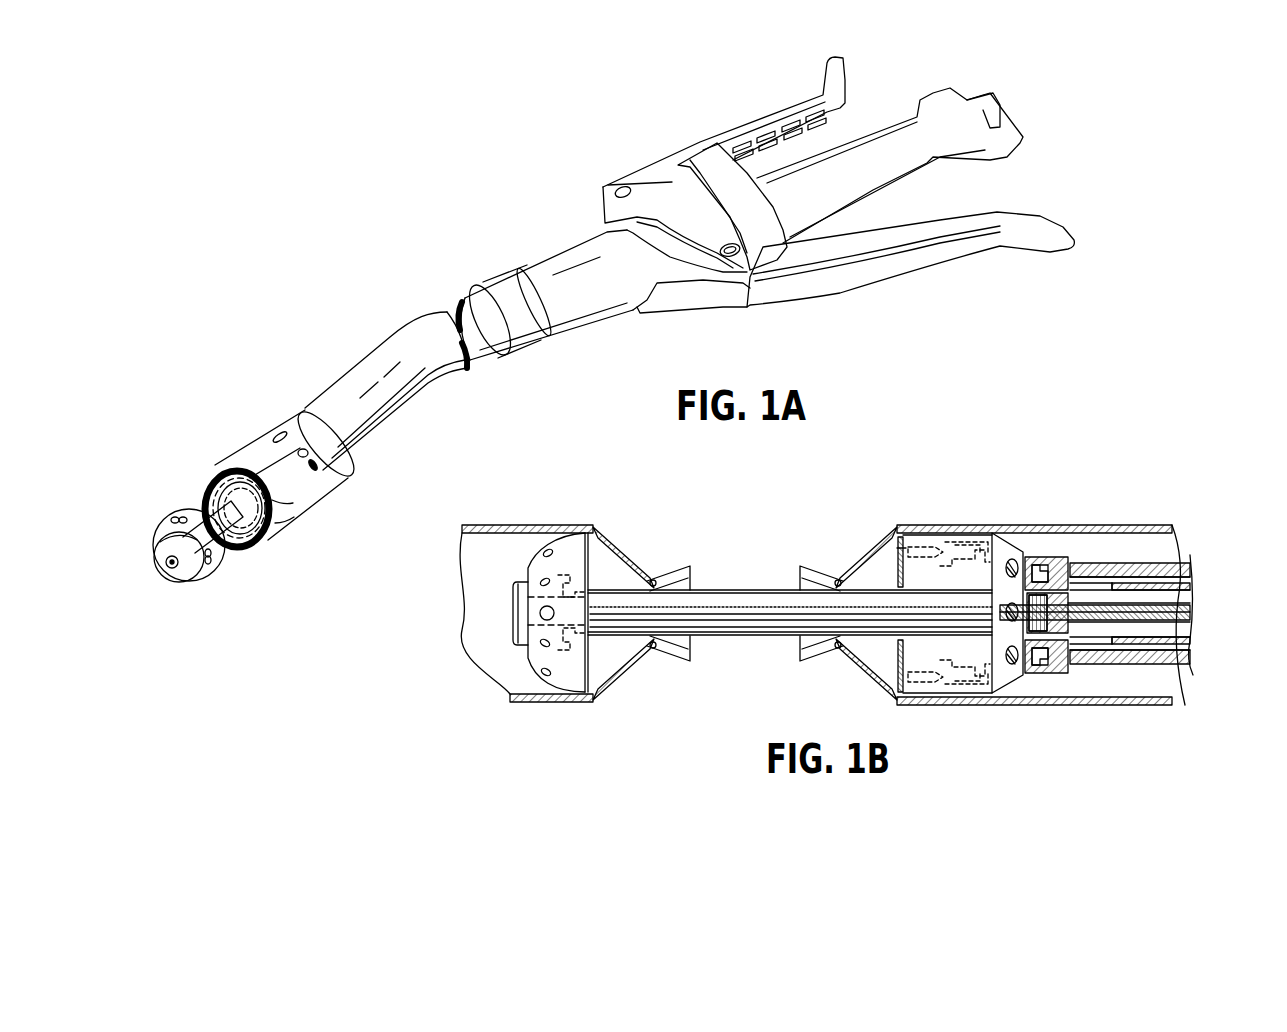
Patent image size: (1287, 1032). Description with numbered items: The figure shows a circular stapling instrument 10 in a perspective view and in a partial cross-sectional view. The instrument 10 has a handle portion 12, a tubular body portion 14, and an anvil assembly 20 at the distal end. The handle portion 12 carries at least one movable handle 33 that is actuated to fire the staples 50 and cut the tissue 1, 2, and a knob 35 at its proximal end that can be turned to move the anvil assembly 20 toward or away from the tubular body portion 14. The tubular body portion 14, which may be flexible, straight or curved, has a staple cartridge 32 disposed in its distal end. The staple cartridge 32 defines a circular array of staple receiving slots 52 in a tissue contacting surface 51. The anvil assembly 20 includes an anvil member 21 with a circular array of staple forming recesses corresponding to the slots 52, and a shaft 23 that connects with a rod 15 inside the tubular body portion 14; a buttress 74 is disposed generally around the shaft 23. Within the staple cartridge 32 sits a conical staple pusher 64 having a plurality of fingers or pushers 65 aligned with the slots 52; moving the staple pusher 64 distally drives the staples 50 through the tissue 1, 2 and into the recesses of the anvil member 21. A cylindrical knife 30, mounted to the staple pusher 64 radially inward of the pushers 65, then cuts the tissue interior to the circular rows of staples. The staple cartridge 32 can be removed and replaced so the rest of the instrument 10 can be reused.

In FIG. 1B, the tissue 1 is at (1063, 705).
In FIG. 1B, the tissue 2 is at (517, 525).
In FIG. 1A, the circular stapling instrument 10 is at (355, 228).
In FIG. 1B, the circular stapling instrument 10 is at (730, 545).
In FIG. 1A, the handle portion 12 is at (632, 160).
In FIG. 1A, the tubular body portion 14 is at (430, 330).
In FIG. 1B, the tubular body portion 14 is at (1183, 563).
In FIG. 1A, the rod 15 is at (240, 497).
In FIG. 1A, the anvil assembly 20 is at (234, 573).
In FIG. 1B, the anvil assembly 20 is at (528, 680).
In FIG. 1A, the anvil member 21 is at (170, 512).
In FIG. 1B, the anvil member 21 is at (573, 682).
In FIG. 1A, the shaft 23 is at (250, 543).
In FIG. 1B, the knife 30 is at (948, 563).
In FIG. 1A, the staple cartridge 32 is at (266, 428).
In FIG. 1B, the staple cartridge 32 is at (1012, 532).
In FIG. 1A, the movable handle 33 is at (780, 115).
In FIG. 1A, the knob 35 is at (867, 102).
In FIG. 1B, the staples 50 is at (924, 547).
In FIG. 1A, the tissue contacting surface 51 is at (310, 493).
In FIG. 1B, the tissue contacting surface 51 is at (898, 535).
In FIG. 1A, the staple receiving slots 52 is at (300, 515).
In FIG. 1B, the staple pusher 64 is at (1040, 570).
In FIG. 1B, the pushers 65 is at (962, 553).
In FIG. 1A, the buttress 74 is at (212, 473).
In FIG. 1B, the buttress 74 is at (897, 548).